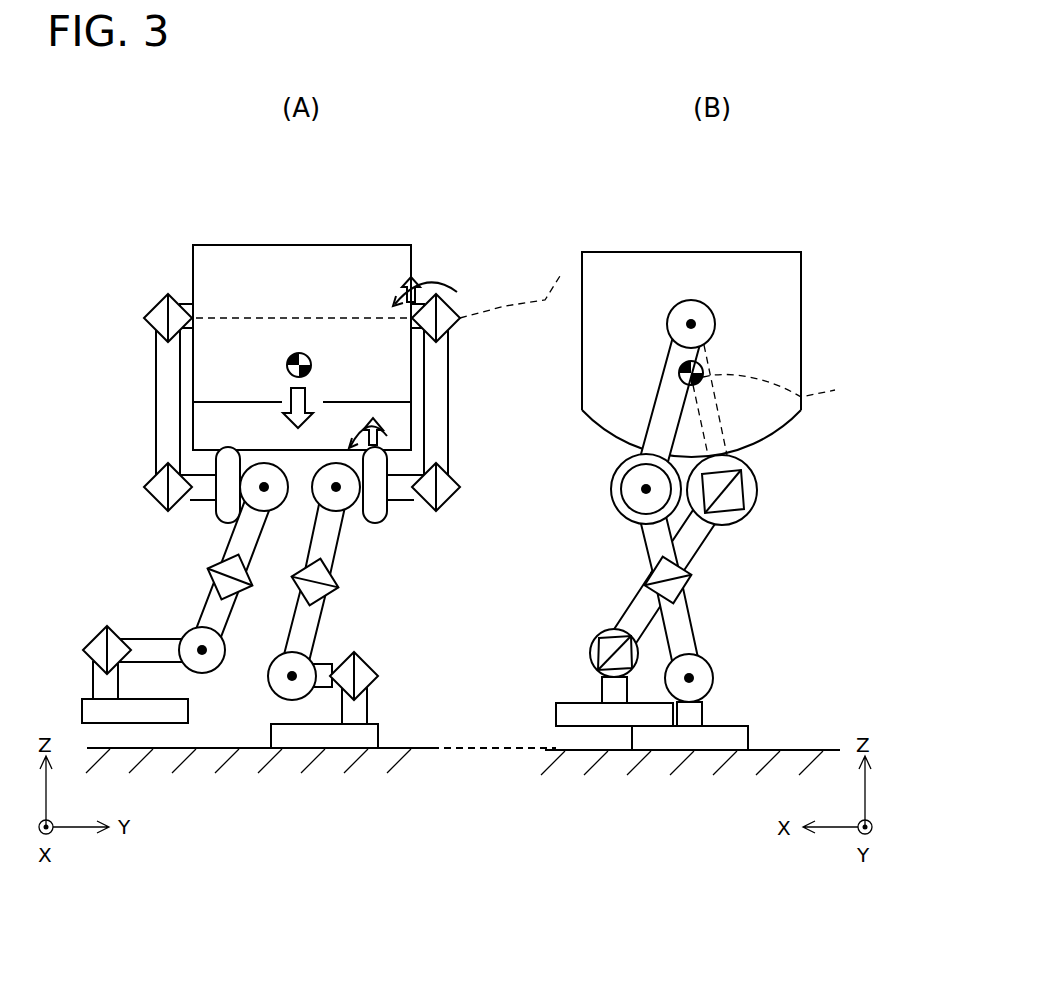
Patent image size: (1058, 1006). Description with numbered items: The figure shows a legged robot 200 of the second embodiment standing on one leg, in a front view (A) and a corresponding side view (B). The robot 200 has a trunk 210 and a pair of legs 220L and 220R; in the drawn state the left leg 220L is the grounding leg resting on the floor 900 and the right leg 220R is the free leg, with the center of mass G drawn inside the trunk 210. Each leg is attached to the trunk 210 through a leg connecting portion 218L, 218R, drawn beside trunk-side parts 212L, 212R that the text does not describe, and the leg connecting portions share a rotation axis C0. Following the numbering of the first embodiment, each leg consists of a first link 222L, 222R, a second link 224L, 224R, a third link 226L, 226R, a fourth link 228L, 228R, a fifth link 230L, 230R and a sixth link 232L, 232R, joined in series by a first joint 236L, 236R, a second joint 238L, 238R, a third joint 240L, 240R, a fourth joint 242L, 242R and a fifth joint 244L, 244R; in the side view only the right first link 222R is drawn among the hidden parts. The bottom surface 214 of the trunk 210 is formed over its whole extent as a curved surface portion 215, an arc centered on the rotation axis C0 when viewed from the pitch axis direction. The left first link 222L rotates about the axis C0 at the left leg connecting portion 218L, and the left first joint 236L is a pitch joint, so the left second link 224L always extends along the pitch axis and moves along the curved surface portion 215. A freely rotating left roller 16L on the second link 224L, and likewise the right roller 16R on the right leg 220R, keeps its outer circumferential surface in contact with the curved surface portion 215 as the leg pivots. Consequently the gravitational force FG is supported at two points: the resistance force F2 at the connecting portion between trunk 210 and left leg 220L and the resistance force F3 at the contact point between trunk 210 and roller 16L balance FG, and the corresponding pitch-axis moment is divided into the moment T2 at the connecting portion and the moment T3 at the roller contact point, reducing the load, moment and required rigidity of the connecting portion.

The legged robot 200 is at (478, 318).
The trunk 210 is at (183, 247).
The right hip mounting bracket 212R is at (192, 282).
The left hip mounting bracket 212L is at (412, 250).
The bottom surface 214 is at (549, 429).
The curved surface portion 215 is at (404, 423).
The right leg connecting portion 218R is at (152, 305).
The left leg connecting portion 218L is at (456, 310).
The right leg 220R is at (482, 499).
The left leg 220L is at (564, 403).
The right first link 222R is at (156, 400).
The left first link 222L is at (448, 402).
The right second link 224R is at (188, 500).
The left second link 224L is at (400, 500).
The right third link 226R is at (232, 538).
The left third link 226L is at (335, 556).
The right fourth link 228R is at (207, 605).
The left fourth link 228L is at (322, 613).
The right fifth link 230R is at (137, 639).
The left fifth link 230L is at (330, 663).
The right sixth link 232R is at (82, 705).
The left sixth link 232L is at (380, 737).
The right first joint 236R is at (148, 476).
The left first joint 236L is at (460, 484).
The right second joint 238R is at (278, 510).
The left second joint 238L is at (350, 510).
The right third joint 240R is at (242, 590).
The left third joint 240L is at (338, 586).
The right fourth joint 242R is at (206, 675).
The left fourth joint 242L is at (270, 689).
The right fifth joint 244R is at (100, 630).
The left fifth joint 244L is at (378, 670).
The right roller 16R is at (437, 590).
The left roller 16L is at (522, 606).
The floor surface 900 is at (392, 750).
The center of gravity G is at (290, 355).
The gravitational force FG is at (282, 410).
The resistance force F2 is at (403, 285).
The resistance force F3 is at (367, 425).
The moment T2 is at (430, 283).
The moment T3 is at (355, 432).
The rotation axis C0 is at (688, 322).